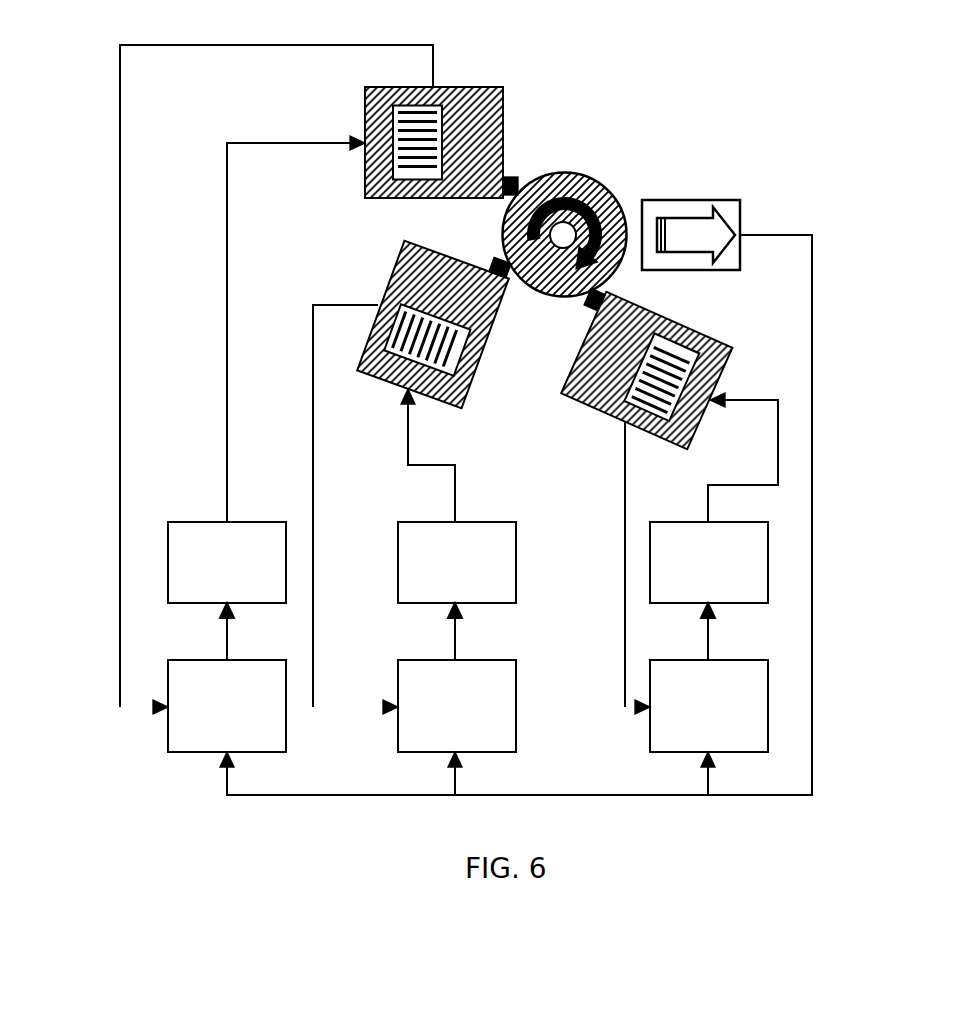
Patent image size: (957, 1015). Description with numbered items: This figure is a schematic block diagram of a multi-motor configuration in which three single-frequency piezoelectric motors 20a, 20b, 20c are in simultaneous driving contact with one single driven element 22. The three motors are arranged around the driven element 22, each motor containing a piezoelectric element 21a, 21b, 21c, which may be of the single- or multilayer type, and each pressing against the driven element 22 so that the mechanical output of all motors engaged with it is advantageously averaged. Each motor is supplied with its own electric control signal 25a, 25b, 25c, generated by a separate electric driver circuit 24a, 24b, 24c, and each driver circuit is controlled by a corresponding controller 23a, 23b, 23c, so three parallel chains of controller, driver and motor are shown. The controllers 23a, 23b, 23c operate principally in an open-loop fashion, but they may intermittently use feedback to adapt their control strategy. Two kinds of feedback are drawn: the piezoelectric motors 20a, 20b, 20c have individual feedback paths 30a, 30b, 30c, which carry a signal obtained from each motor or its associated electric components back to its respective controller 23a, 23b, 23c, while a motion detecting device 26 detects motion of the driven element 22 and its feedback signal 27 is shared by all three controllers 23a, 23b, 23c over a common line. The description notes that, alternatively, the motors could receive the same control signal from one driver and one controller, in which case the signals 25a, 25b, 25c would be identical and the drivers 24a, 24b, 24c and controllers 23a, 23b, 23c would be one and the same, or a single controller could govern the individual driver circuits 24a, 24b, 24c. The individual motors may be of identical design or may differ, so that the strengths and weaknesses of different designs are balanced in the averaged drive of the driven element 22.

The piezoelectric motor 20a is at (483, 104).
The piezoelectric motor 20b is at (266, 318).
The piezoelectric motor 20c is at (716, 341).
The piezoelectric element 21a is at (420, 130).
The piezoelectric element 21b is at (398, 333).
The piezoelectric element 21c is at (705, 340).
The driven element 22 is at (592, 173).
The controller 23a is at (227, 706).
The controller 23b is at (457, 706).
The controller 23c is at (709, 706).
The electric driver circuit 24a is at (227, 562).
The electric driver circuit 24b is at (457, 562).
The electric driver circuit 24c is at (709, 562).
The electric control signal 25a is at (283, 143).
The electric control signal 25b is at (458, 487).
The electric control signal 25c is at (778, 458).
The motion detecting device 26 is at (692, 197).
The feedback signal 27 is at (817, 558).
The feedback path 30a is at (120, 152).
The feedback path 30b is at (350, 303).
The feedback path 30c is at (622, 535).